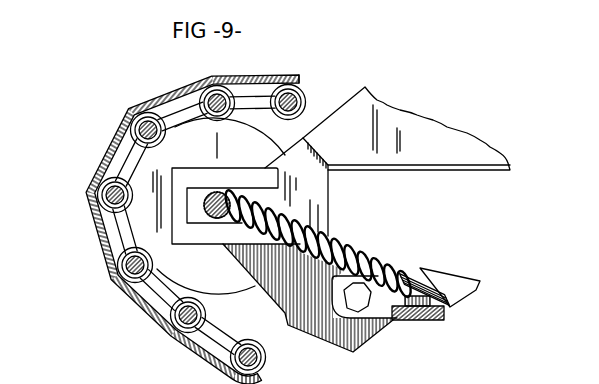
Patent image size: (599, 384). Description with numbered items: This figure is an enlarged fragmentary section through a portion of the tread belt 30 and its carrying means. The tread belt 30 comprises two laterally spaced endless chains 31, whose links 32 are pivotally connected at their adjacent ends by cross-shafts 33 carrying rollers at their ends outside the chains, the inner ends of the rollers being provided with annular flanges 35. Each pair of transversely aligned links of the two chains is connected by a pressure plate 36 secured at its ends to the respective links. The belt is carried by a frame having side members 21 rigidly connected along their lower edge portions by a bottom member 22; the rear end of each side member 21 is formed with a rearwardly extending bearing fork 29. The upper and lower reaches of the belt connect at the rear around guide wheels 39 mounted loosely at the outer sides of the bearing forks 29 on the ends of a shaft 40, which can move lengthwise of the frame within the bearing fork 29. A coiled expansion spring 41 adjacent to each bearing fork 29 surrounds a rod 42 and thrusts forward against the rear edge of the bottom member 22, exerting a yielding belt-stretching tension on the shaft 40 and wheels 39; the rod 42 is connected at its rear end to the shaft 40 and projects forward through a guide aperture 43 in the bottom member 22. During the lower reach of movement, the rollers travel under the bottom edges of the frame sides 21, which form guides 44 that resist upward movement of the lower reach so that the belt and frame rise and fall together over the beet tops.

The side member 21 is at (418, 138).
The bottom member 22 is at (420, 321).
The bearing fork 29 is at (219, 234).
The tread belt 30 is at (102, 153).
The endless chain 31 is at (150, 322).
The link 32 is at (266, 84).
The cross-shaft 33 is at (221, 88).
The annular flange 35 is at (300, 82).
The pressure plate 36 is at (164, 93).
The guide wheel 39 is at (233, 146).
The shaft 40 is at (204, 205).
The coiled expansion spring 41 is at (330, 239).
The rod 42 is at (440, 275).
The guide aperture 43 is at (412, 276).
The guide 44 is at (337, 350).